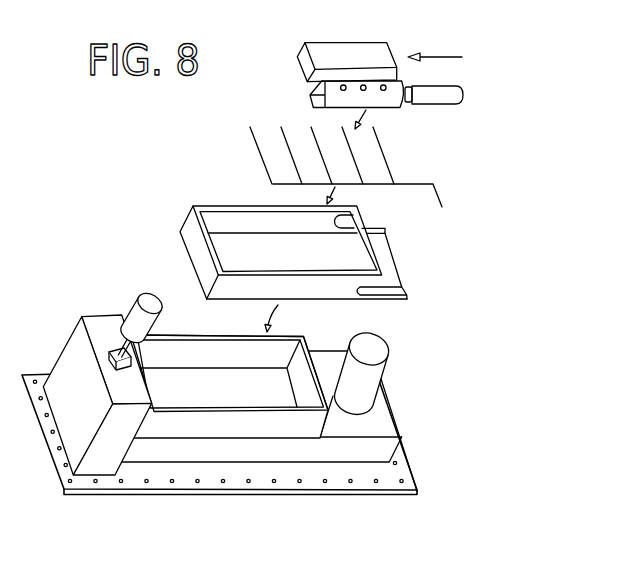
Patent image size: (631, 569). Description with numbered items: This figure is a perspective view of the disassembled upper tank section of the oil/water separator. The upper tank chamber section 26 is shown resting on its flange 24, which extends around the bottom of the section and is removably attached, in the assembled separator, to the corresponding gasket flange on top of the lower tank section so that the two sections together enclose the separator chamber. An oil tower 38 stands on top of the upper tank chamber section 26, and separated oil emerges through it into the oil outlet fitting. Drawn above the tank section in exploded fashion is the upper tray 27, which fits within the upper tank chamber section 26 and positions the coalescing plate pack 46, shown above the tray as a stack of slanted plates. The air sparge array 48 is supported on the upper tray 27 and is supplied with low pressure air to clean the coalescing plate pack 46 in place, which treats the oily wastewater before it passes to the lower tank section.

The flange 24 is at (240, 482).
The upper tank chamber section 26 is at (409, 437).
The upper tray 27 is at (193, 257).
The oil tower 38 is at (372, 382).
The coalescing plate pack 46 is at (315, 95).
The air sparge array 48 is at (393, 154).